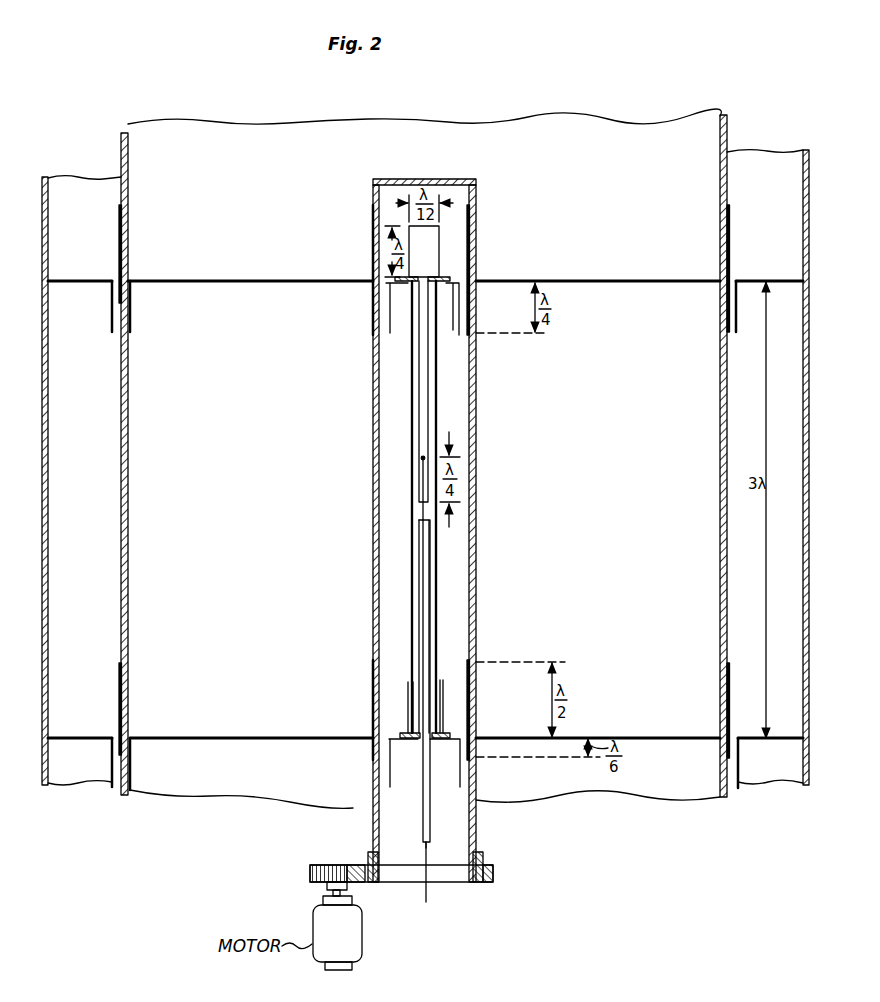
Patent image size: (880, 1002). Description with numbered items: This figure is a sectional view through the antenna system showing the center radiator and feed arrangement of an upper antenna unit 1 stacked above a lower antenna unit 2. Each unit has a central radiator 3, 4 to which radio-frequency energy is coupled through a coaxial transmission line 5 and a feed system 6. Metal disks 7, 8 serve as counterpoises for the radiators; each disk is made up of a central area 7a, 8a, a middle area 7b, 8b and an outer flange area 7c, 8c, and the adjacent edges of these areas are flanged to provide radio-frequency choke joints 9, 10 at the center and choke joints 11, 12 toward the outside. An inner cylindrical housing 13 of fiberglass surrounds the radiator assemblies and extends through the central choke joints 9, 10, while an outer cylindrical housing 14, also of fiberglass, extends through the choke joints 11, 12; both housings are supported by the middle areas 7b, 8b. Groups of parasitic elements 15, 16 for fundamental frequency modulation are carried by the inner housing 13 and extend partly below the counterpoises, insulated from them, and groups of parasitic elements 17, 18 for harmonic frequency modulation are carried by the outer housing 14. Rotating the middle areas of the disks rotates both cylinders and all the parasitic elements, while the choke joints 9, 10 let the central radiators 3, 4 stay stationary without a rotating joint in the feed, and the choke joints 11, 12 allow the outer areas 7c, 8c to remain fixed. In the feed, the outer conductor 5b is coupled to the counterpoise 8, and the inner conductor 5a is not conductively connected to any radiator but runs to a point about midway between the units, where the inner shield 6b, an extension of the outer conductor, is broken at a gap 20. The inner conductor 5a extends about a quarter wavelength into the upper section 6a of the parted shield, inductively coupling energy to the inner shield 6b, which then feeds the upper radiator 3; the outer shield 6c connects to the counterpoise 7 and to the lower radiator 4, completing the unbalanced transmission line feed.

The upper antenna unit 1 is at (624, 366).
The lower antenna unit 2 is at (614, 802).
The central radiator 3 is at (439, 258).
The central radiator 4 is at (443, 690).
The coaxial transmission line 5 is at (434, 819).
The inner conductor 5a is at (426, 868).
The outer conductor 5b is at (430, 790).
The feed system 6 is at (441, 402).
The upper section of parted inner shield 6a is at (436, 430).
The inner shield 6b is at (428, 376).
The outer shield 6c is at (412, 382).
The metal disk 7 is at (230, 280).
The central area 7a is at (398, 285).
The middle area 7b is at (304, 283).
The outer flange area 7c is at (73, 283).
The metal disk 8 is at (240, 736).
The central area 8a is at (398, 742).
The middle area 8b is at (295, 741).
The outer flange area 8c is at (70, 741).
The radio-frequency choke joint 9 is at (383, 338).
The radio-frequency choke joint 10 is at (383, 790).
The radio-frequency choke joint 11 is at (116, 335).
The radio-frequency choke joint 12 is at (121, 790).
The inner cylindrical housing 13 is at (476, 196).
The outer cylindrical housing 14 is at (727, 170).
The parasitic elements 15 is at (476, 250).
The parasitic elements 16 is at (476, 700).
The parasitic elements 17 is at (729, 250).
The parasitic elements 18 is at (728, 705).
The gap 20 is at (423, 512).